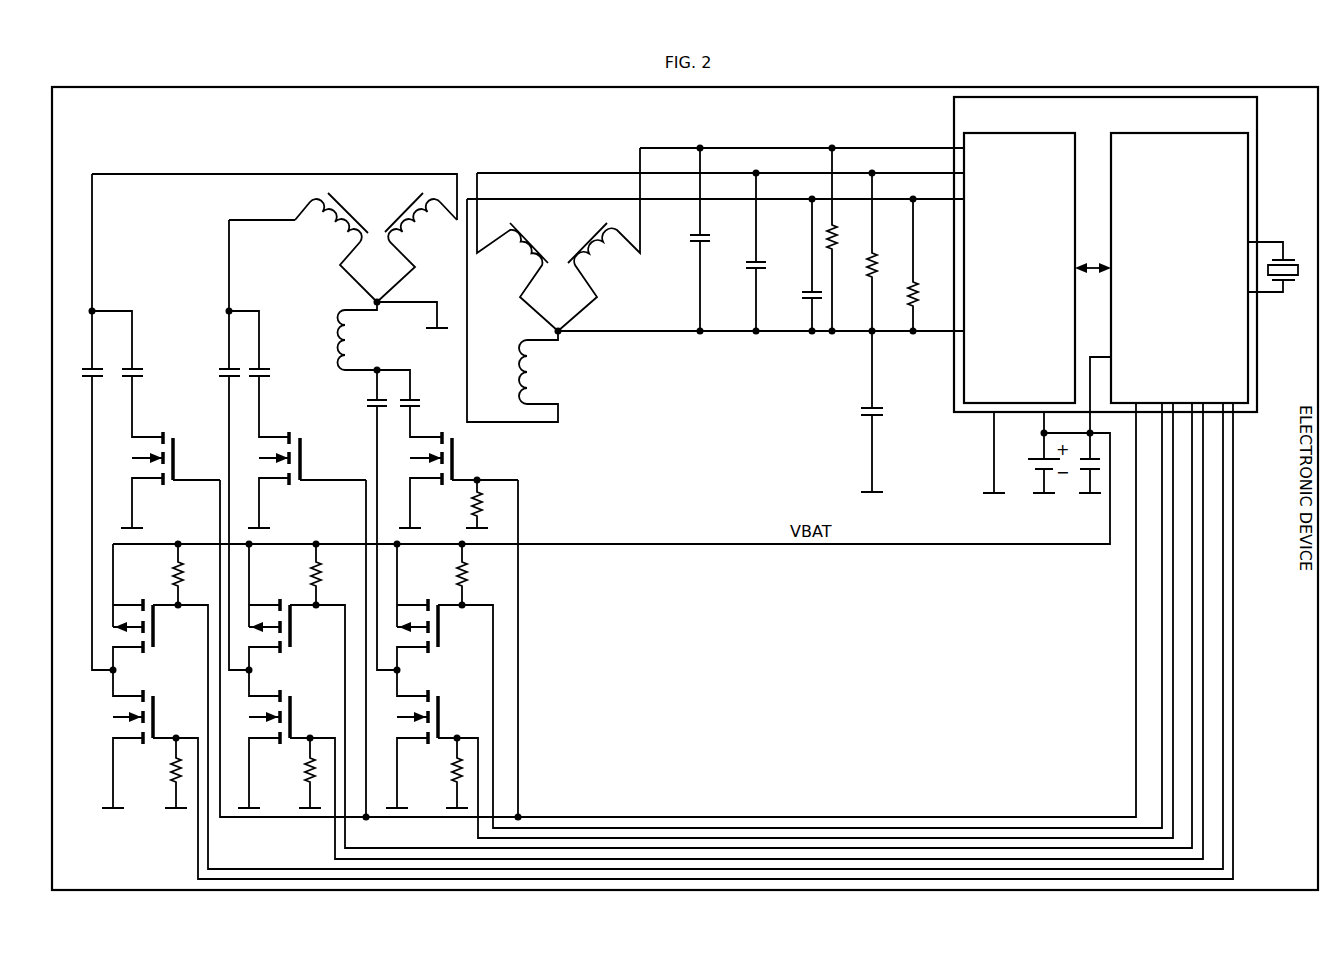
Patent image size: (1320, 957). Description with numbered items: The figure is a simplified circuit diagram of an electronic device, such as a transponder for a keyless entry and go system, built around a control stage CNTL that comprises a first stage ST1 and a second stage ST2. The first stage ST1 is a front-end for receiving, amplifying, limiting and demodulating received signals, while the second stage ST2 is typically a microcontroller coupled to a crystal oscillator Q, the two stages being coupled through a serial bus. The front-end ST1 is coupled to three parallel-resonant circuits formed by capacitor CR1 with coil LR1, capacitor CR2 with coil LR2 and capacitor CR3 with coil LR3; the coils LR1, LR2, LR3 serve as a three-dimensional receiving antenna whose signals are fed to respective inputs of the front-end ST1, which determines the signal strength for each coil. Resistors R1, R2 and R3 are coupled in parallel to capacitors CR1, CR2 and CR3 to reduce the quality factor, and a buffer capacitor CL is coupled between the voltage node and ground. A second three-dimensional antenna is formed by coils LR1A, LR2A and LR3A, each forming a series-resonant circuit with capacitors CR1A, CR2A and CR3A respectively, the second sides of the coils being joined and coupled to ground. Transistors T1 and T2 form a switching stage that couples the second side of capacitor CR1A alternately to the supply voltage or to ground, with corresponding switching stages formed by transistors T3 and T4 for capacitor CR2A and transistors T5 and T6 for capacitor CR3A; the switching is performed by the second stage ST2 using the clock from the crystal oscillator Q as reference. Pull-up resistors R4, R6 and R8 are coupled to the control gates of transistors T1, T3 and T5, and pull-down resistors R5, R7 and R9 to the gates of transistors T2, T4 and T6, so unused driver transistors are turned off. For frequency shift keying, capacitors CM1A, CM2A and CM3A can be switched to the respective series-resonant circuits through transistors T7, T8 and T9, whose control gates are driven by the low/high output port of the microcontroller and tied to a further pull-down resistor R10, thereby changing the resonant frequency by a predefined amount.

The control stage CNTL is at (1105, 254).
The first stage ST1 is at (1019, 268).
The second stage ST2 is at (1179, 268).
The crystal oscillator Q is at (1281, 267).
The coil LR1 is at (512, 310).
The coil LR2 is at (517, 252).
The coil LR3 is at (599, 239).
The coil LR1A is at (364, 351).
The coil LR2A is at (334, 247).
The coil LR3A is at (417, 247).
The capacitor CR1 is at (793, 265).
The capacitor CR2 is at (736, 252).
The capacitor CR3 is at (681, 239).
The capacitor CR1A is at (371, 520).
The capacitor CR2A is at (225, 445).
The capacitor CR3A is at (87, 422).
The capacitor CM1A is at (426, 408).
The capacitor CM2A is at (264, 374).
The capacitor CM3A is at (132, 374).
The buffer capacitor CL is at (859, 411).
The resistor R1 is at (925, 265).
The resistor R2 is at (884, 252).
The resistor R3 is at (844, 239).
The pull-up resistor R4 is at (449, 574).
The pull-down resistor R5 is at (447, 773).
The pull-up resistor R6 is at (303, 574).
The pull-down resistor R7 is at (300, 773).
The pull-up resistor R8 is at (165, 574).
The pull-down resistor R9 is at (165, 773).
The pull-down resistor R10 is at (462, 504).
The transistor T1 is at (780, 615).
The transistor T2 is at (793, 620).
The transistor T3 is at (721, 625).
The transistor T4 is at (734, 631).
The transistor T5 is at (669, 636).
The transistor T6 is at (681, 641).
The transistor T7 is at (452, 480).
The transistor T8 is at (300, 480).
The transistor T9 is at (163, 480).